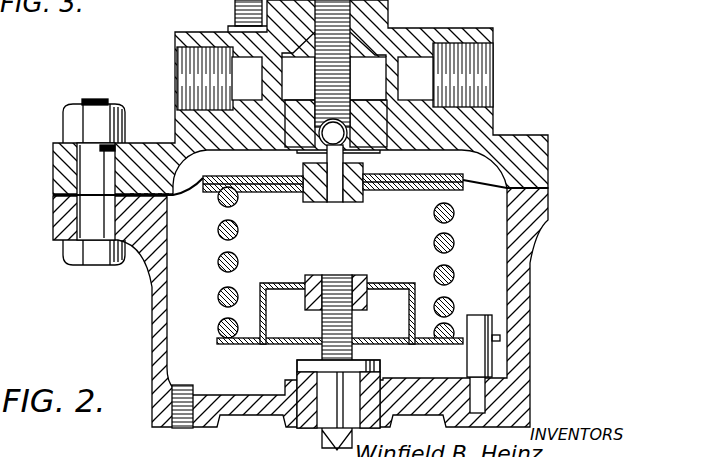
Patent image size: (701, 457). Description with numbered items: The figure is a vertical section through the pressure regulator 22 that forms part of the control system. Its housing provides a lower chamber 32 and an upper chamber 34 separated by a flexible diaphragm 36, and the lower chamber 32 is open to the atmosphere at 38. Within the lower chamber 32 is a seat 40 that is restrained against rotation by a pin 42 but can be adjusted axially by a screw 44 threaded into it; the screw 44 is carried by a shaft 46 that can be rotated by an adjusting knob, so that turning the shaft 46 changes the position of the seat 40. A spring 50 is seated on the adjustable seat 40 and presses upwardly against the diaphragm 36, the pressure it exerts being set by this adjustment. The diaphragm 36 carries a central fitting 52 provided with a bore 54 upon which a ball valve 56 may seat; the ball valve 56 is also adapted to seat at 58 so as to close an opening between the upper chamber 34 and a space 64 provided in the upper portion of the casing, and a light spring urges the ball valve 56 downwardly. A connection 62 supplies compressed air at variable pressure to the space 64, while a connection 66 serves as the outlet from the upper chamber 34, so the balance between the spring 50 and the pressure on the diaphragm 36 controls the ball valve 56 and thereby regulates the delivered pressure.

The pressure regulator 22 is at (339, 228).
The lower chamber 32 is at (490, 230).
The upper chamber 34 is at (483, 163).
The flexible diaphragm 36 is at (393, 173).
The opening to atmosphere 38 is at (180, 420).
The seat 40 is at (273, 282).
The pin 42 is at (483, 360).
The screw 44 is at (340, 272).
The shaft 46 is at (330, 390).
The spring 50 is at (218, 262).
The central fitting 52 is at (303, 167).
The bore 54 is at (333, 202).
The ball valve 56 is at (326, 124).
The seat 58 is at (384, 108).
The connection 62 is at (490, 83).
The space 64 is at (370, 70).
The connection 66 is at (182, 87).